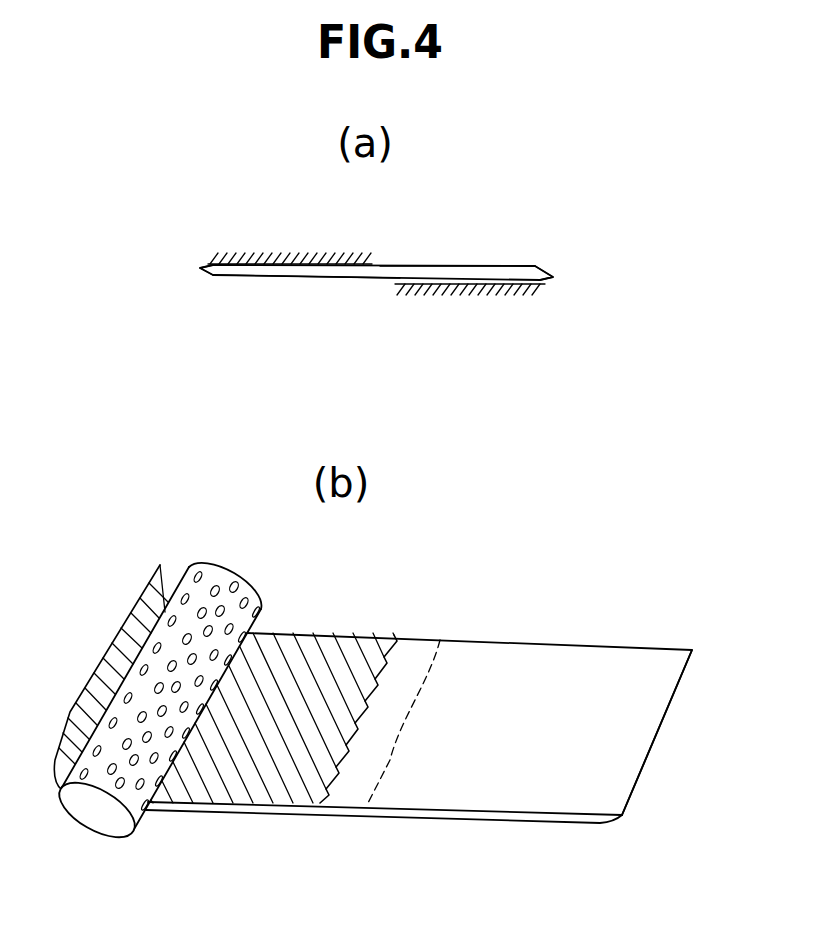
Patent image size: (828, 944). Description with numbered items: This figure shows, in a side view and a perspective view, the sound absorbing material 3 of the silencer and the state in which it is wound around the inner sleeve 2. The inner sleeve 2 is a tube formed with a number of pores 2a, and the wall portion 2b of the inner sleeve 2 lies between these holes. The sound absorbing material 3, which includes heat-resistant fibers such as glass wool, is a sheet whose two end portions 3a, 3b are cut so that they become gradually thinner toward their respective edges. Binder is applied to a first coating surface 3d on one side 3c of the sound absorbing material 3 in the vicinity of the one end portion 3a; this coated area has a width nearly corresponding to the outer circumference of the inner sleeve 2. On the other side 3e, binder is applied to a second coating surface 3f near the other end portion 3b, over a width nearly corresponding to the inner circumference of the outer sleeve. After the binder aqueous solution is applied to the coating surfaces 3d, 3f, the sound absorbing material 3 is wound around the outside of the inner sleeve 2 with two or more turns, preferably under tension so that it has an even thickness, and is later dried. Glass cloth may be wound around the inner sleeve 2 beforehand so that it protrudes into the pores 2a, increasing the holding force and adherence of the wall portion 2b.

The inner sleeve 2 is at (248, 578).
The pores 2a is at (225, 563).
The wall portion 2b is at (157, 745).
The sound absorbing material 3 is at (388, 268).
The end portion 3a is at (200, 268).
The end portion 3b is at (553, 277).
The one side 3c is at (478, 265).
The first coating surface 3d is at (272, 262).
The other side 3e is at (359, 284).
The second coating surface 3f is at (451, 293).